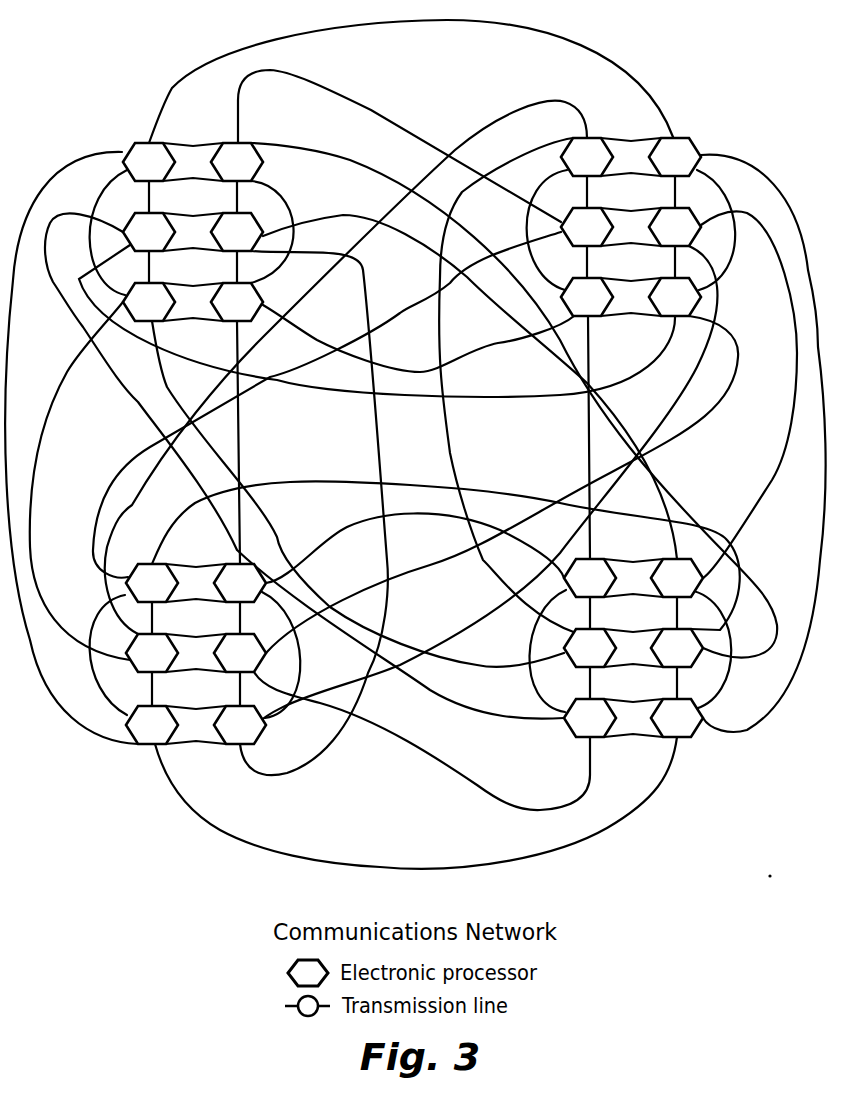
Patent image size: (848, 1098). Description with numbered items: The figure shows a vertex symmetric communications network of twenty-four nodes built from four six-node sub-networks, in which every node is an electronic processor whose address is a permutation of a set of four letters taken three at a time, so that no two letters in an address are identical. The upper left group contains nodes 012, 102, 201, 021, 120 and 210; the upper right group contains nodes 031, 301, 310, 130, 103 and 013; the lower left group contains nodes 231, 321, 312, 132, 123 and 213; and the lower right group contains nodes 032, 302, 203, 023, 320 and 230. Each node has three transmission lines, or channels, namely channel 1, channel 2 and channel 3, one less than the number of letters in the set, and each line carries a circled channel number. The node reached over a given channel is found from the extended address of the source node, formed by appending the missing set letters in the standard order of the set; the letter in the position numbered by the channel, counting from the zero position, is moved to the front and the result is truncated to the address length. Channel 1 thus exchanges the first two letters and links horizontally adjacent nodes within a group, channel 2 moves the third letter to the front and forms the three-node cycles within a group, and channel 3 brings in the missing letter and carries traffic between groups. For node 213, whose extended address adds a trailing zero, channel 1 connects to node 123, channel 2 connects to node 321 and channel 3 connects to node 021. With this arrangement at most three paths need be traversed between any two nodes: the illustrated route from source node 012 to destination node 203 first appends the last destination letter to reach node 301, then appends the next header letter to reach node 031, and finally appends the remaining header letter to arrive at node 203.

The channel 1 is at (413, 441).
The channel 2 is at (412, 444).
The channel 3 is at (416, 444).
The node 012 is at (149, 162).
The node 102 is at (237, 162).
The node 201 is at (149, 232).
The node 021 is at (237, 232).
The node 120 is at (149, 302).
The node 210 is at (237, 302).
The node 031 is at (587, 157).
The node 301 is at (675, 157).
The node 310 is at (587, 227).
The node 130 is at (675, 227).
The node 103 is at (587, 297).
The node 013 is at (675, 297).
The node 231 is at (152, 583).
The node 321 is at (240, 583).
The node 312 is at (152, 653).
The node 132 is at (240, 653).
The node 123 is at (152, 725).
The node 213 is at (240, 725).
The node 032 is at (590, 578).
The node 302 is at (677, 578).
The node 203 is at (590, 648).
The node 023 is at (677, 648).
The node 320 is at (590, 718).
The node 230 is at (677, 718).